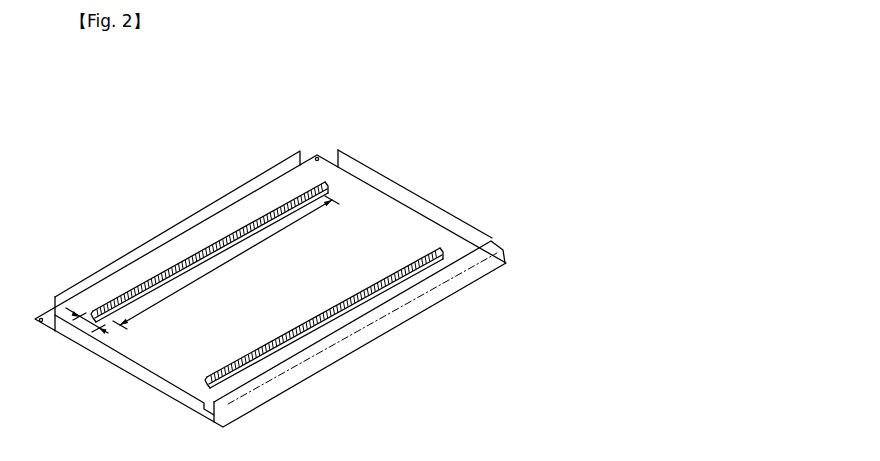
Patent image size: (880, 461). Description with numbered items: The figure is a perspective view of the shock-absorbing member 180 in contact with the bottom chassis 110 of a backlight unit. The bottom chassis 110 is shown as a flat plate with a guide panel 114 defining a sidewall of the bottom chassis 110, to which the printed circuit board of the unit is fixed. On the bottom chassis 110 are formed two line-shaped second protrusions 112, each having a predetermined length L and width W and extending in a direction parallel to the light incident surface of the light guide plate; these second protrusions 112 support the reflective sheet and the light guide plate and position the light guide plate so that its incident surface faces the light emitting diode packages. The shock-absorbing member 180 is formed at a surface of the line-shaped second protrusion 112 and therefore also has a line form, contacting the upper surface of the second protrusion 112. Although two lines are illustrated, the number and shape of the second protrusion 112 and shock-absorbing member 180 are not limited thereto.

The bottom chassis 110 is at (100, 295).
The second protrusion 112 is at (334, 186).
The guide panel 114 is at (480, 273).
The shock-absorbing member 180 is at (300, 193).
The length L is at (226, 262).
The width W is at (90, 328).